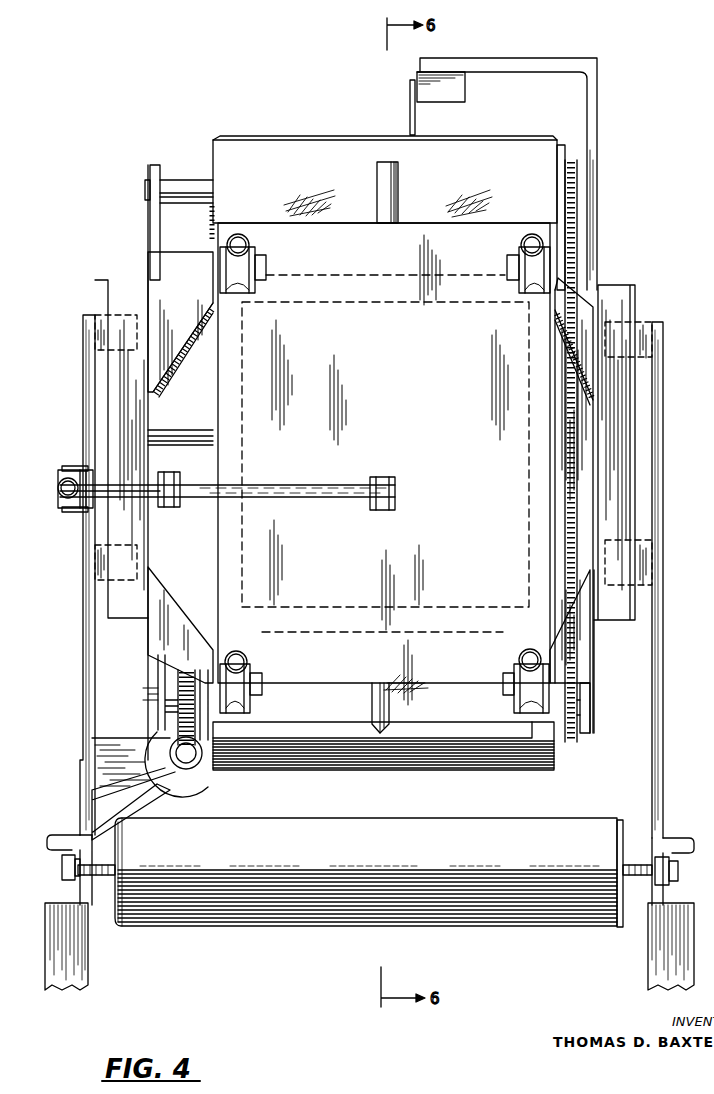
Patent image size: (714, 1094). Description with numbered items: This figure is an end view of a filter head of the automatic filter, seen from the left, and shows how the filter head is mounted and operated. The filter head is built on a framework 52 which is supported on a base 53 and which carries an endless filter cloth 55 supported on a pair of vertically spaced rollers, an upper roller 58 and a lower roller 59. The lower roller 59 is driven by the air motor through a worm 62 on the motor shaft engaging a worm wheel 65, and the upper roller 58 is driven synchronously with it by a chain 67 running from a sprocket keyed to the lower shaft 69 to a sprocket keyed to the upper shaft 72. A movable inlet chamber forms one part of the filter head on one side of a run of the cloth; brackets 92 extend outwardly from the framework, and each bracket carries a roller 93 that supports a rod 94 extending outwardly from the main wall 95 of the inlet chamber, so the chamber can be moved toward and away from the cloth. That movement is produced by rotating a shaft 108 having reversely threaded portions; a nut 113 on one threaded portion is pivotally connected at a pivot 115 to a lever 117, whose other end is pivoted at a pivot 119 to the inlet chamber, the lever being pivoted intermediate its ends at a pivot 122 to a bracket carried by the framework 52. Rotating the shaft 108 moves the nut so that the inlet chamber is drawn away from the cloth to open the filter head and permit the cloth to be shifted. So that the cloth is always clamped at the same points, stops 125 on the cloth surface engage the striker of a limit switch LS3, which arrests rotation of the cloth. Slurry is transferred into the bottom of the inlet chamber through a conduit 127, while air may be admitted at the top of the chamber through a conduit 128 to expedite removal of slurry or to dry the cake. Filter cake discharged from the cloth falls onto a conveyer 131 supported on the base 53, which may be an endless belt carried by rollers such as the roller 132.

The framework 52 is at (663, 500).
The base 53 is at (70, 892).
The endless filter cloth 55 is at (279, 147).
The upper roller 58 is at (562, 150).
The lower roller 59 is at (557, 751).
The worm 62 is at (189, 769).
The worm wheel 65 is at (172, 680).
The chain 67 is at (576, 249).
The lower shaft 69 is at (590, 707).
The upper shaft 72 is at (179, 182).
The bracket 92 is at (173, 358).
The roller 93 is at (252, 259).
The rod 94 is at (240, 236).
The main wall 95 is at (442, 684).
The shaft 108 is at (62, 506).
The nut 113 is at (57, 488).
The pivot connection 115 is at (62, 469).
The lever 117 is at (285, 485).
The pivot connection 119 is at (388, 477).
The pivot 122 is at (179, 481).
The stop 125 is at (356, 136).
The conduit 127 is at (372, 702).
The conduit 128 is at (398, 176).
The conveyer 131 is at (301, 818).
The roller 132 is at (620, 820).
The limit switch LS3 is at (445, 103).